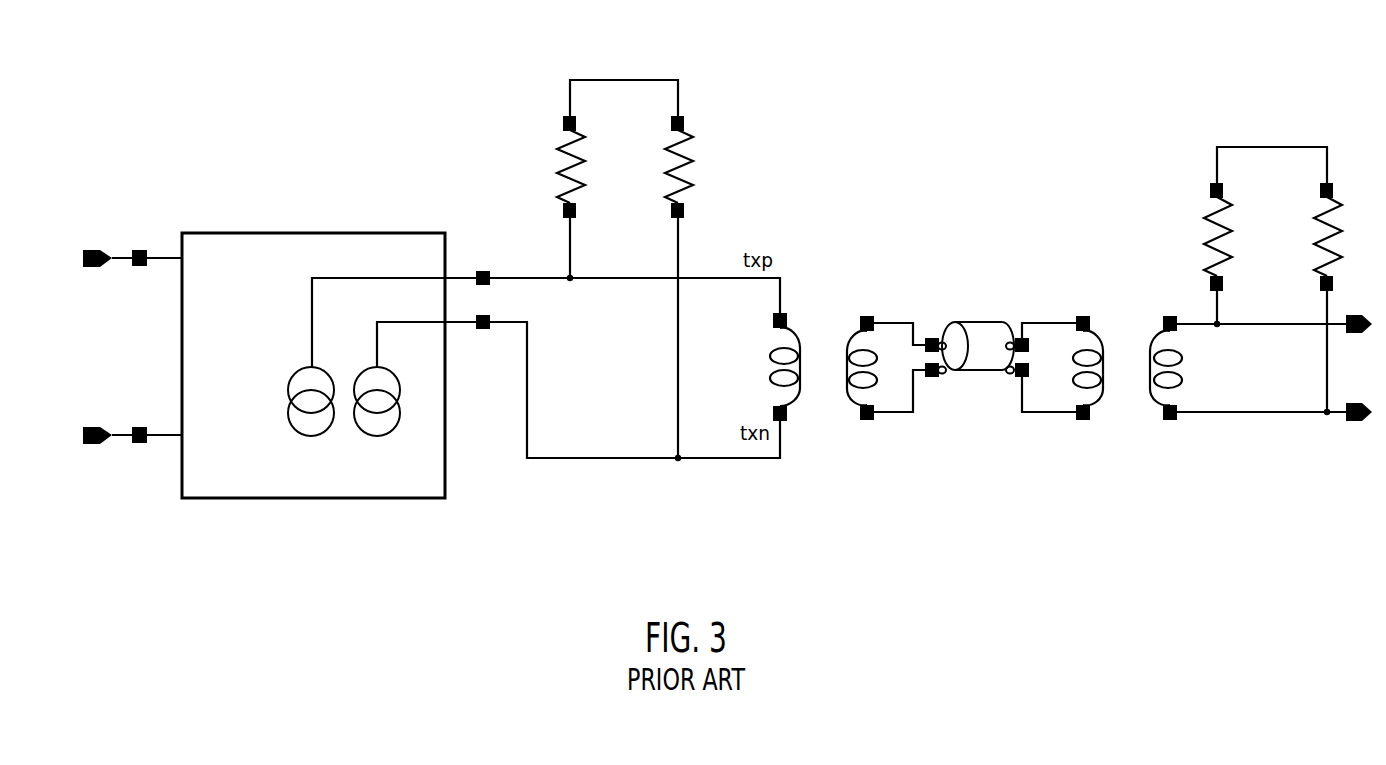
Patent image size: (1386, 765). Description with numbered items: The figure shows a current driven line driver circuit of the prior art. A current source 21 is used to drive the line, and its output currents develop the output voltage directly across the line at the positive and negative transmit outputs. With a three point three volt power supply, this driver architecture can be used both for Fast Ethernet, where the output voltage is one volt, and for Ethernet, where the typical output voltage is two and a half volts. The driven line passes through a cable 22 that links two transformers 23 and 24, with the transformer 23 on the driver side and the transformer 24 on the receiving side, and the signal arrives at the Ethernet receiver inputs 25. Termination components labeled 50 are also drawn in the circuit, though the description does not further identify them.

The current source 21 is at (332, 247).
The cable 22 is at (977, 377).
The transformer 23 is at (825, 397).
The transformer 24 is at (1130, 413).
The Ethernet receiver inputs 25 is at (1323, 423).
The 50 ohm termination resistor 50 is at (953, 256).